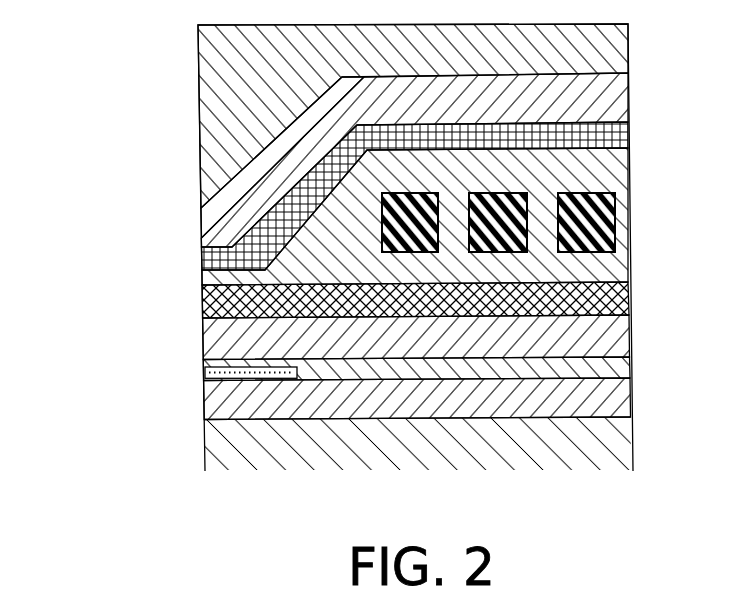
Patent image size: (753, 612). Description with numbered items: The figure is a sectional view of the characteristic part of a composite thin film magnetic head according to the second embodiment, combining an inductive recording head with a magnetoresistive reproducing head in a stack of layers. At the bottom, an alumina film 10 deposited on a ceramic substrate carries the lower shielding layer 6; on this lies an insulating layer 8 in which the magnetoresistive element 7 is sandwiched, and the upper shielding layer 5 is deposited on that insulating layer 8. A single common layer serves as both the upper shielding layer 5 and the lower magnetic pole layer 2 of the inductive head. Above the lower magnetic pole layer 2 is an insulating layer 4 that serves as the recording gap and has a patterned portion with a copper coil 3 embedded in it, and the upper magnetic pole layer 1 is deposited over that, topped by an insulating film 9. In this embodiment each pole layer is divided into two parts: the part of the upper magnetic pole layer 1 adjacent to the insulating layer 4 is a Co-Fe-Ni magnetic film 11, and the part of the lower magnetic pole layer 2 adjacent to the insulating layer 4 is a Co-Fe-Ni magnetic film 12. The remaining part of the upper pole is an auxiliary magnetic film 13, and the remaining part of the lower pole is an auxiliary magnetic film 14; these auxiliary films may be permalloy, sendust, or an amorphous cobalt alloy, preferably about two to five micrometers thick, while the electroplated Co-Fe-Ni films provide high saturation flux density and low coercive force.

The upper magnetic pole layer 1 is at (336, 177).
The lower magnetic pole layer 2 is at (363, 326).
The copper coil 3 is at (600, 232).
The insulating layer 4 is at (607, 178).
The upper shielding layer 5 is at (82, 302).
The lower shielding layer 6 is at (207, 407).
The magnetoresistive element 7 is at (207, 373).
The insulating layer 8 is at (606, 368).
The insulating film 9 is at (596, 47).
The alumina film 10 is at (617, 444).
The Co-Fe-Ni magnetic film 11 is at (225, 263).
The Co-Fe-Ni magnetic film 12 is at (207, 301).
The auxiliary magnetic film 13 is at (215, 228).
The auxiliary magnetic film 14 is at (208, 347).